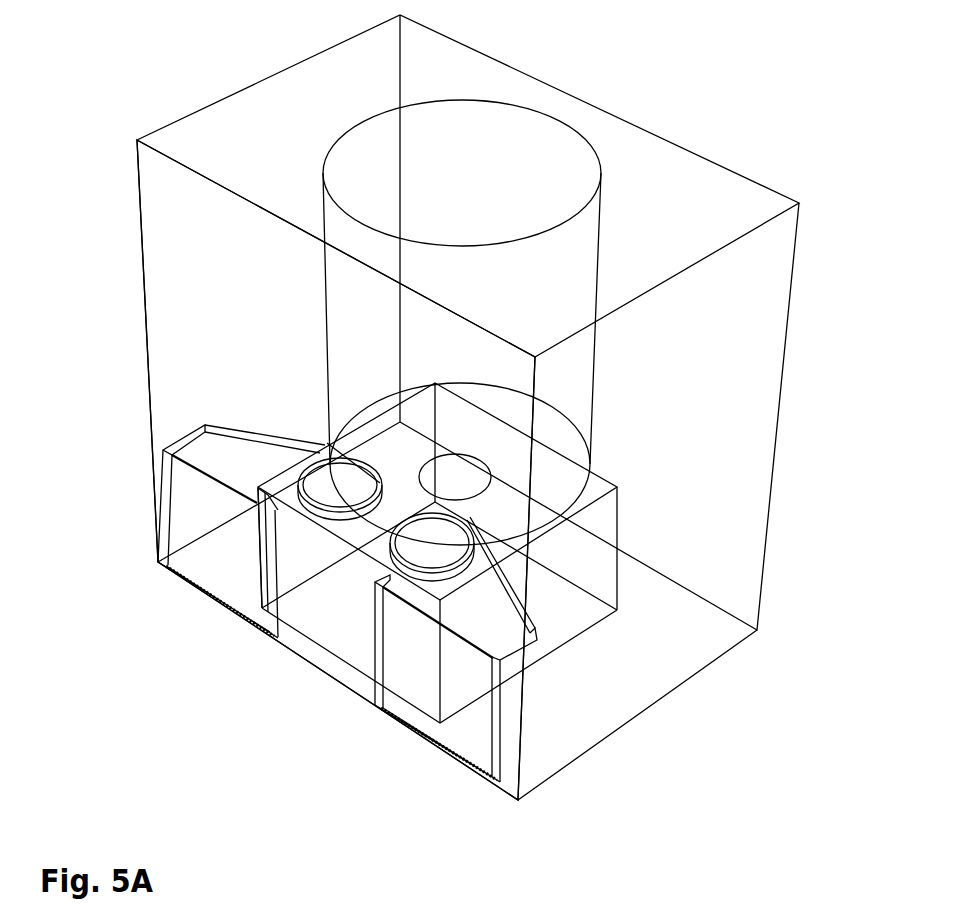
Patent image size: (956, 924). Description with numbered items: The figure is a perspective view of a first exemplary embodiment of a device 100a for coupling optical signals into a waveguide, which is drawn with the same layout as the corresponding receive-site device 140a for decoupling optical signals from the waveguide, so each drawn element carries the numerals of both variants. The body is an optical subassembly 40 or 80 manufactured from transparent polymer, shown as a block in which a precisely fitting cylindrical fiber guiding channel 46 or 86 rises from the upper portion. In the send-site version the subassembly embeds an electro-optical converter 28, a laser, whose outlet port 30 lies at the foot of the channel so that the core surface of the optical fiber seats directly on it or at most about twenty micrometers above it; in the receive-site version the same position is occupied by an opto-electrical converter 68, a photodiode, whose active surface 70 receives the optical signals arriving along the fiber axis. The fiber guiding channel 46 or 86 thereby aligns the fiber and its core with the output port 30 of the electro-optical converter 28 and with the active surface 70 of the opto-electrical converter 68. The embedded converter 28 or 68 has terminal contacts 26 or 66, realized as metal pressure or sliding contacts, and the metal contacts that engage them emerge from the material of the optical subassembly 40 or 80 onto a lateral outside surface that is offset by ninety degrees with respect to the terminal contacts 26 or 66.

The device for coupling optical signals into a waveguide 100a is at (423, 402).
The device for decoupling optical signals from a waveguide 140a is at (140, 23).
The optical subassembly 40 is at (301, 470).
The optical subassembly 80 is at (237, 338).
The cylindrical fiber guiding channel 46 is at (484, 288).
The cylindrical fiber guiding channel 86 is at (458, 210).
The electro-optical converter 28 is at (550, 553).
The opto-electrical converter 68 is at (570, 607).
The outlet port 30 is at (628, 454).
The active surface 70 is at (455, 478).
The terminal contacts 26 is at (347, 603).
The terminal contacts 66 is at (403, 648).